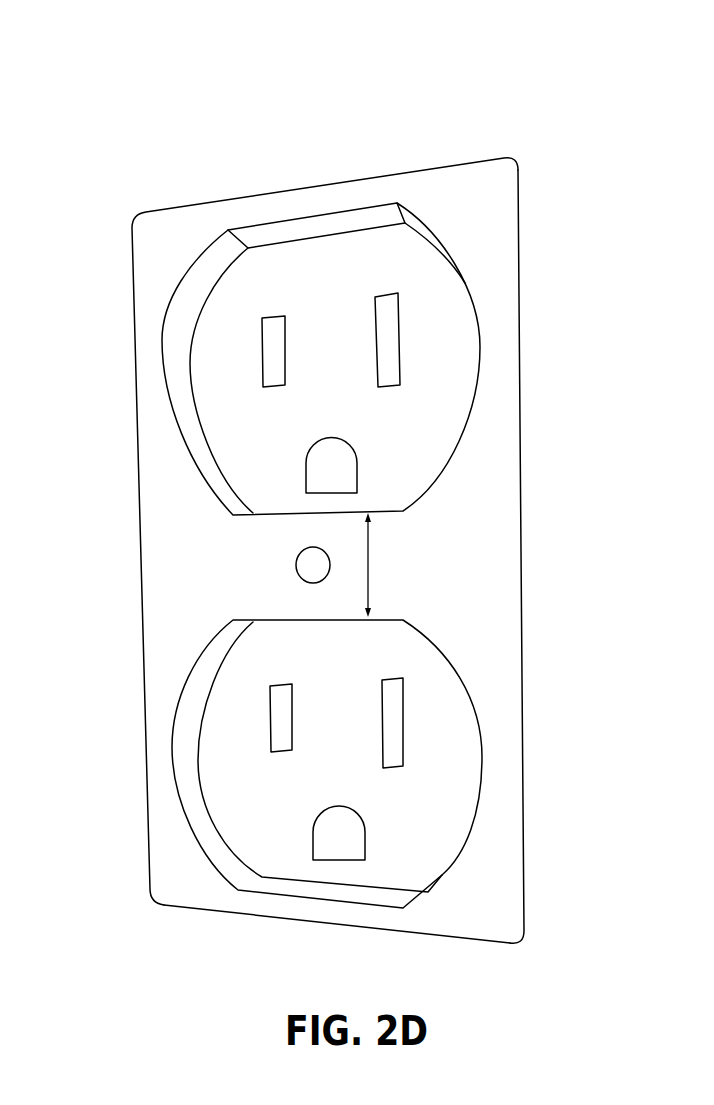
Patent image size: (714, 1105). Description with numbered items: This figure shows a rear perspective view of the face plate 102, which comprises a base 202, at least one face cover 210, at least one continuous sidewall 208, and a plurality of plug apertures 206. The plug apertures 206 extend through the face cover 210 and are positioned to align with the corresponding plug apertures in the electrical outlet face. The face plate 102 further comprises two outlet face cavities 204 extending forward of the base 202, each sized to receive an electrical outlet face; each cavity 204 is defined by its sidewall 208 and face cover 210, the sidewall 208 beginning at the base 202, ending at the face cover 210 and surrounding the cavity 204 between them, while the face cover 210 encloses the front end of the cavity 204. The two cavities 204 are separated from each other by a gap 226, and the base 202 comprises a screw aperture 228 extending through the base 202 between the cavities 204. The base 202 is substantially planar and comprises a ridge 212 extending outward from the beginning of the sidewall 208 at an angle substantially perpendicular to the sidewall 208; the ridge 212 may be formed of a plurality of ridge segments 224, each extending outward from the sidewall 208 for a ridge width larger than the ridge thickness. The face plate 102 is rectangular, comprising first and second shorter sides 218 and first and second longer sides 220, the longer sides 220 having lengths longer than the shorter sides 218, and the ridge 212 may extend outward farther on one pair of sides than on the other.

The face plate 102 is at (108, 136).
The base 202 is at (495, 162).
The outlet face cavity 204 is at (250, 467).
The plug apertures 206 is at (287, 385).
The continuous sidewall 208 is at (335, 222).
The face cover 210 is at (442, 340).
The ridge 212 is at (283, 200).
The shorter sides 218 is at (327, 915).
The longer sides 220 is at (493, 588).
The ridge segments 224 is at (430, 178).
The gap 226 is at (372, 555).
The screw aperture 228 is at (297, 565).